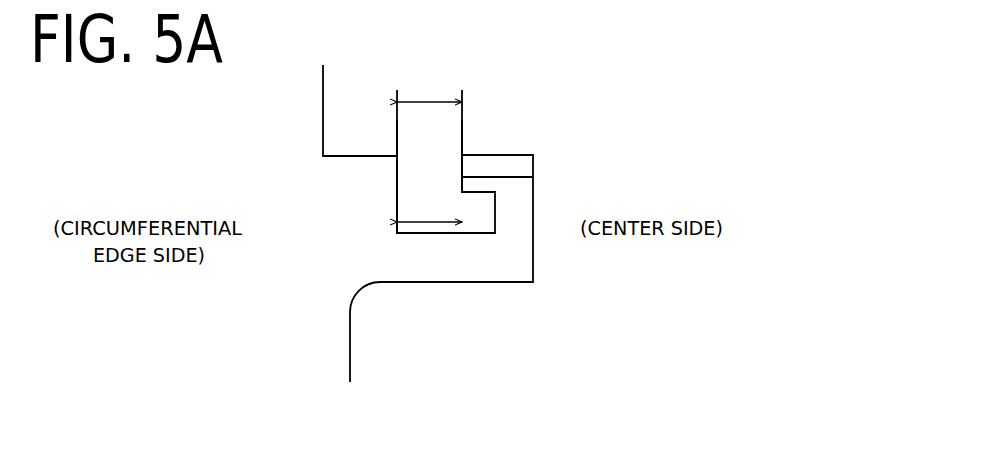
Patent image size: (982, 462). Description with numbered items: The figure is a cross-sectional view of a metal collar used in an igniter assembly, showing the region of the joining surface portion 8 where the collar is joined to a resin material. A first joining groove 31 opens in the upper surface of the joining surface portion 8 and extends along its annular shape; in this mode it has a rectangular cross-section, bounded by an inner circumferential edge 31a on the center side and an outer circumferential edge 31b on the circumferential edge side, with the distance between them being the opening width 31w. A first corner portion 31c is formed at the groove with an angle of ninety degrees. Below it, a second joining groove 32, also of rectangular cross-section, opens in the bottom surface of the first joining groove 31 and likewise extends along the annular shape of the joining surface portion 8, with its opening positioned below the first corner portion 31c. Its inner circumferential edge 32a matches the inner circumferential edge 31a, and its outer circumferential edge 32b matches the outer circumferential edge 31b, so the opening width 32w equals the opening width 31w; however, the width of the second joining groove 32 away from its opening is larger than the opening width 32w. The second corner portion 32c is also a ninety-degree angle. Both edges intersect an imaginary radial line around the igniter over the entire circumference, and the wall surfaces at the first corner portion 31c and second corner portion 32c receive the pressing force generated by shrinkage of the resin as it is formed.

The joining surface portion 8 is at (520, 273).
The first joining groove 31 is at (427, 167).
The opening width of the first joining groove 31w is at (429, 88).
The inner circumferential edge of the first joining groove 31a is at (463, 152).
The outer circumferential edge of the first joining groove 31b is at (397, 157).
The first corner portion 31c is at (533, 155).
The second joining groove 32 is at (427, 237).
The opening width of the second joining groove 32w is at (429, 208).
The inner circumferential edge of the second joining groove 32a is at (478, 186).
The outer circumferential edge of the second joining groove 32b is at (397, 193).
The second corner portion 32c is at (475, 167).